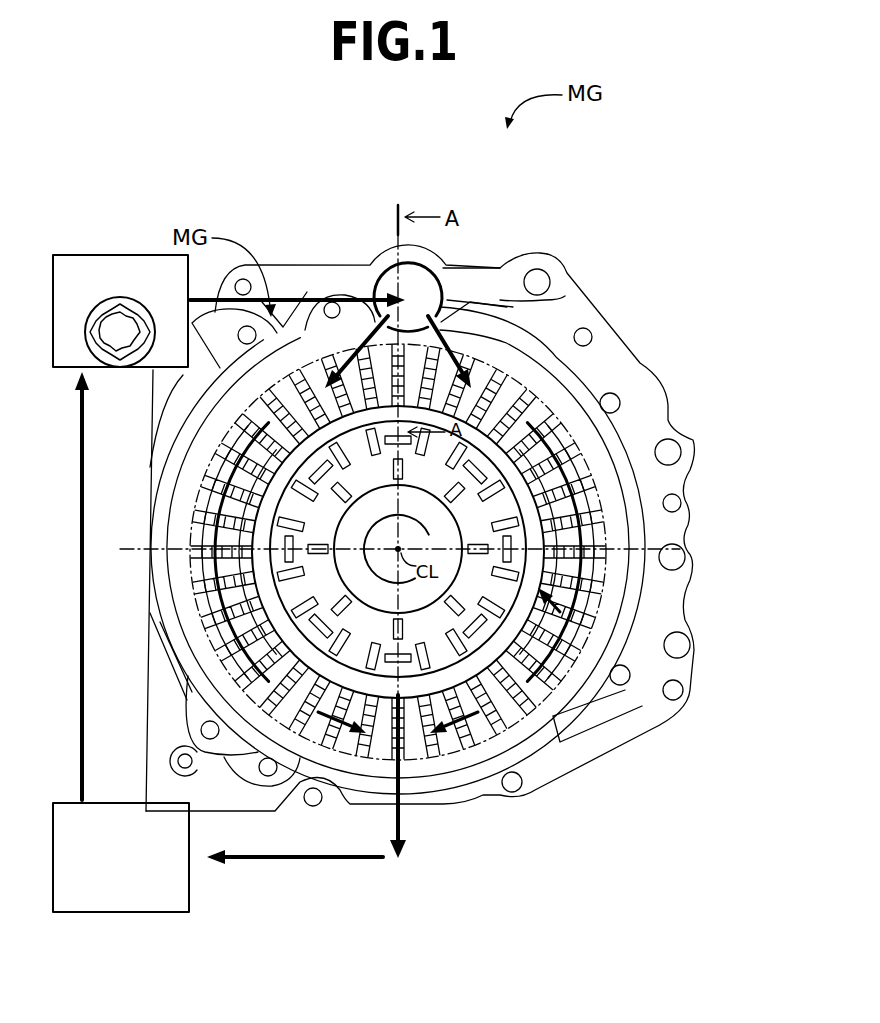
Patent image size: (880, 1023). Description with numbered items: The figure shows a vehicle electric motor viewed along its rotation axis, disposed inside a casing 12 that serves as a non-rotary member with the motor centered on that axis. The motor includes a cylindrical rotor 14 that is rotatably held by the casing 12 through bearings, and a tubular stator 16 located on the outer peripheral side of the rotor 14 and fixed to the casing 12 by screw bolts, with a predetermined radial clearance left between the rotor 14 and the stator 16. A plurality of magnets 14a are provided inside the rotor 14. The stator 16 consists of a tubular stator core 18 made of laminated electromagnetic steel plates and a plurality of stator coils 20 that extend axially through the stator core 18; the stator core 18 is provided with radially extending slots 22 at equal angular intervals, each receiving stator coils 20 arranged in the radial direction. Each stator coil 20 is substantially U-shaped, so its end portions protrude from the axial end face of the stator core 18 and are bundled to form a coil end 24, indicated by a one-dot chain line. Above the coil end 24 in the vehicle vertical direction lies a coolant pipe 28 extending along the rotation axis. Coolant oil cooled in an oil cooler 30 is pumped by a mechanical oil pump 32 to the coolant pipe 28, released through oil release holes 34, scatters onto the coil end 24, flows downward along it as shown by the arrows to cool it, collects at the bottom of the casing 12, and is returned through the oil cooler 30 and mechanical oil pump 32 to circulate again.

The casing 12 is at (616, 300).
The rotor 14 is at (545, 586).
The magnets 14a is at (456, 645).
The stator 16 is at (550, 340).
The stator core 18 is at (573, 407).
The stator coils 20 is at (582, 465).
The slots 22 is at (598, 508).
The coil end 24 is at (520, 723).
The coolant pipe 28 is at (381, 270).
The oil cooler 30 is at (140, 900).
The mechanical oil pump 32 is at (75, 262).
The oil release holes 34 is at (463, 327).